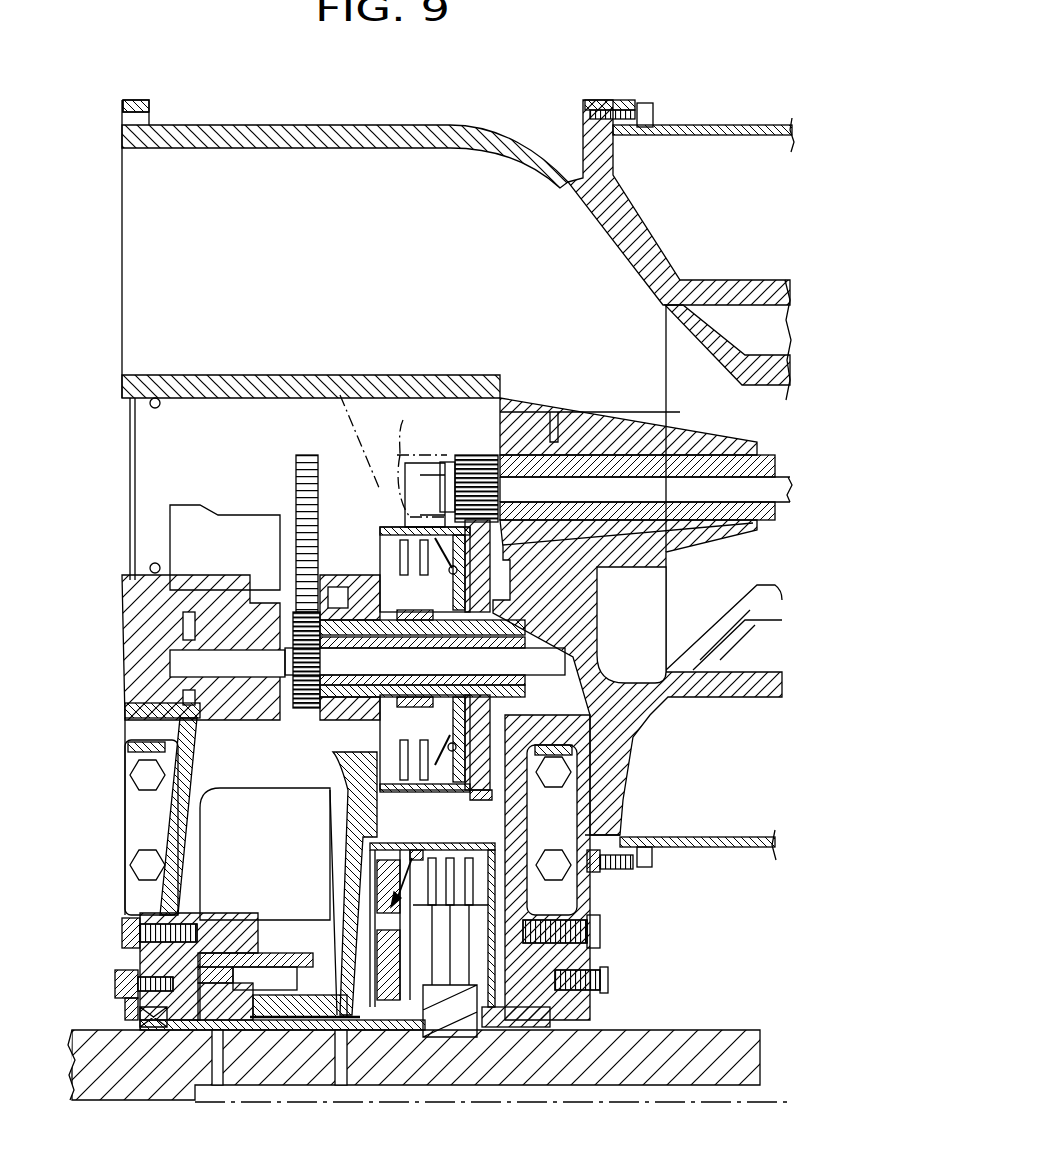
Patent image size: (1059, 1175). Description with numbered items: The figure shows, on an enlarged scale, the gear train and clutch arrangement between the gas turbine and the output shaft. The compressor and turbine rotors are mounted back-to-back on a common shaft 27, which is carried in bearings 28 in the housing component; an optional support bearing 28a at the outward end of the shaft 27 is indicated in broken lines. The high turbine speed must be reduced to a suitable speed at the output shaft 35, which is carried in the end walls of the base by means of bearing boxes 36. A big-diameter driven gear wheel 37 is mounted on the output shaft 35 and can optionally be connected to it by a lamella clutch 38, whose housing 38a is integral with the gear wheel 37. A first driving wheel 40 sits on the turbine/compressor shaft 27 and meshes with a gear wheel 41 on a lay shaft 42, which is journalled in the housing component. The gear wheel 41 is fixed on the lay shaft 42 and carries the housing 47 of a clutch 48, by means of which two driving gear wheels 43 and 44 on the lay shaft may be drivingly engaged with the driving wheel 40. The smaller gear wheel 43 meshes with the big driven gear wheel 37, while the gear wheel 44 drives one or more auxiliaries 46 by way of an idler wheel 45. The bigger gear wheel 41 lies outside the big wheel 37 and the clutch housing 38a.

The common shaft 27 is at (630, 485).
The bearings 28 is at (515, 410).
The support bearing 28a is at (365, 400).
The output shaft 35 is at (690, 1045).
The bearing boxes 36 is at (292, 955).
The driven gear wheel 37 is at (350, 823).
The lamella clutch 38 is at (432, 862).
The clutch housing 38a is at (490, 907).
The first driving wheel 40 is at (462, 455).
The gear wheel 41 is at (480, 752).
The lay shaft 42 is at (495, 612).
The driving gear wheel 43 is at (336, 575).
The driving gear wheel 44 is at (305, 705).
The idler wheel 45 is at (296, 520).
The auxiliaries 46 is at (185, 520).
The clutch housing 47 is at (300, 513).
The clutch 48 is at (400, 762).